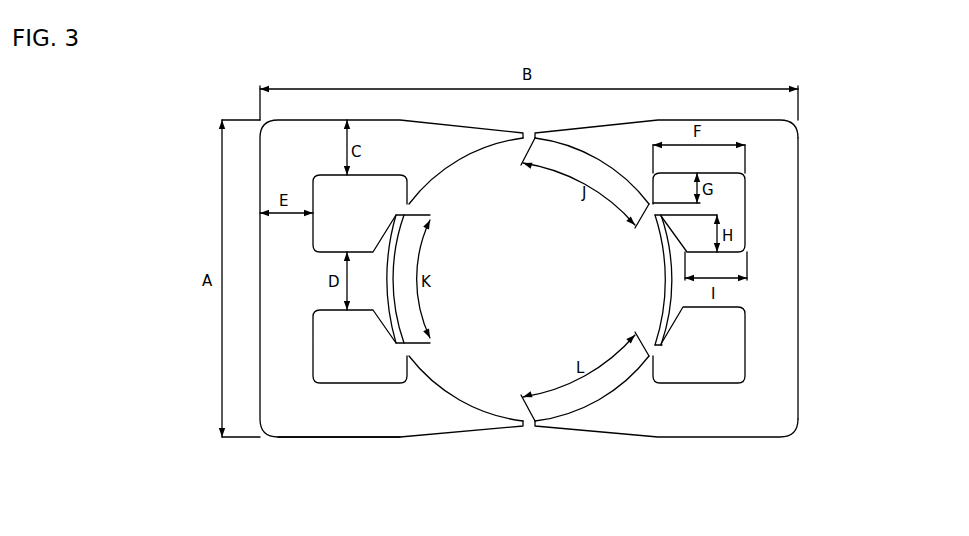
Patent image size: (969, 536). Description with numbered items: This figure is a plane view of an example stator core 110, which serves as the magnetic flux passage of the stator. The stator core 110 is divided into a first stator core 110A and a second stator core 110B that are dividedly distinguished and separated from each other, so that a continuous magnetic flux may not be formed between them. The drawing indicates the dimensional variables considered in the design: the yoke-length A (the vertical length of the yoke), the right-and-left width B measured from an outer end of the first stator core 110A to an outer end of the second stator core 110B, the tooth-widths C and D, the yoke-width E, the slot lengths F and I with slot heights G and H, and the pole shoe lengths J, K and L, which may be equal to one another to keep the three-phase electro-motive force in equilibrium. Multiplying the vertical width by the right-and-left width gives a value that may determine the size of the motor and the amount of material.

The stator core 110 is at (571, 290).
The first stator core 110A is at (784, 240).
The second stator core 110B is at (326, 414).